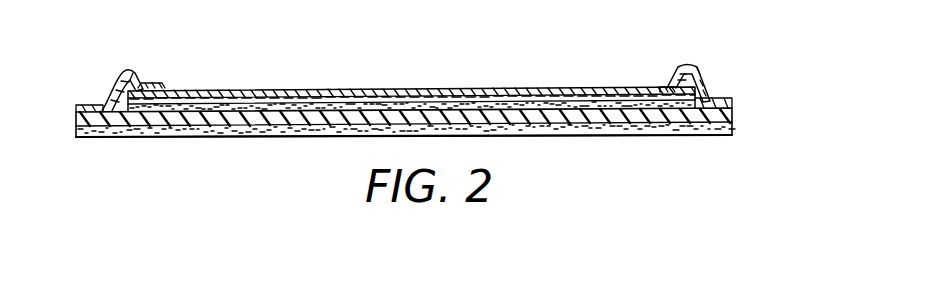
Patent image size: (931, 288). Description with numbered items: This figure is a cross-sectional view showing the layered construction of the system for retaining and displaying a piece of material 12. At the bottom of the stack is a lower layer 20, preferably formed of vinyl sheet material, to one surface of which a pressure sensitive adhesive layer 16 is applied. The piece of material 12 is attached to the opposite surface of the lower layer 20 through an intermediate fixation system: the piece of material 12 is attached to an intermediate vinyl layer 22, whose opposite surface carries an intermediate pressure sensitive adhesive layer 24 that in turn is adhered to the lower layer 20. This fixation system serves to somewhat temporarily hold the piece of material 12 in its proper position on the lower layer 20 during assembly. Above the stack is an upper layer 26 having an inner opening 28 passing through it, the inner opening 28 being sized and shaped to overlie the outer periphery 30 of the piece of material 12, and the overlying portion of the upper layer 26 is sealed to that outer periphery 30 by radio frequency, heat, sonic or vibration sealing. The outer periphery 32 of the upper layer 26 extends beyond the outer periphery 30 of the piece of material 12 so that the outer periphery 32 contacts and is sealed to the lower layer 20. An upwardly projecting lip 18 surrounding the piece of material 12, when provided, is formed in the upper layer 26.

The piece of material 12 is at (411, 71).
The pressure sensitive adhesive layer 16 is at (732, 135).
The upwardly projecting lip 18 is at (692, 64).
The lower layer 20 is at (732, 115).
The intermediate vinyl layer 22 is at (425, 97).
The intermediate pressure sensitive adhesive layer 24 is at (322, 91).
The upper layer 26 is at (723, 96).
The inner opening 28 is at (167, 86).
The outer periphery of piece of material 30 is at (145, 86).
The outer periphery of upper layer 32 is at (88, 103).